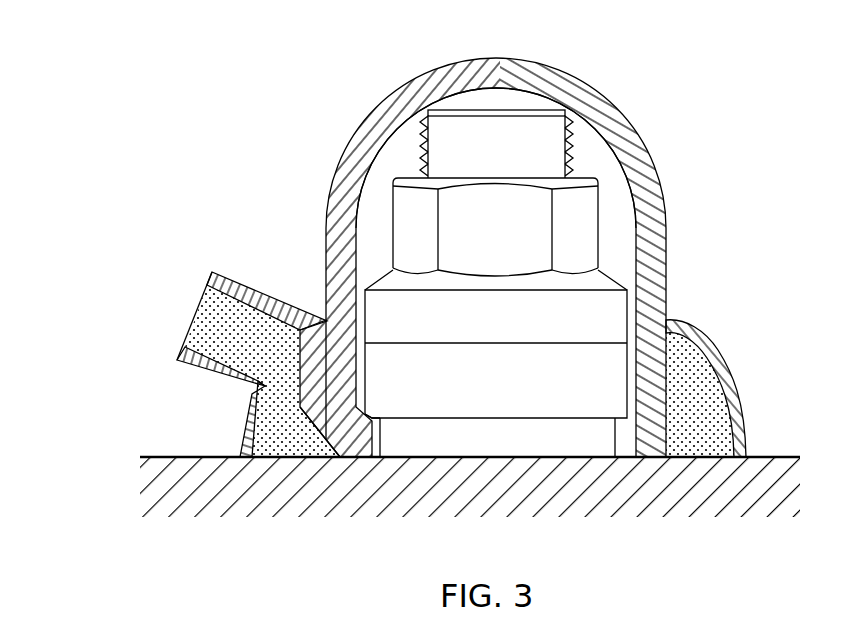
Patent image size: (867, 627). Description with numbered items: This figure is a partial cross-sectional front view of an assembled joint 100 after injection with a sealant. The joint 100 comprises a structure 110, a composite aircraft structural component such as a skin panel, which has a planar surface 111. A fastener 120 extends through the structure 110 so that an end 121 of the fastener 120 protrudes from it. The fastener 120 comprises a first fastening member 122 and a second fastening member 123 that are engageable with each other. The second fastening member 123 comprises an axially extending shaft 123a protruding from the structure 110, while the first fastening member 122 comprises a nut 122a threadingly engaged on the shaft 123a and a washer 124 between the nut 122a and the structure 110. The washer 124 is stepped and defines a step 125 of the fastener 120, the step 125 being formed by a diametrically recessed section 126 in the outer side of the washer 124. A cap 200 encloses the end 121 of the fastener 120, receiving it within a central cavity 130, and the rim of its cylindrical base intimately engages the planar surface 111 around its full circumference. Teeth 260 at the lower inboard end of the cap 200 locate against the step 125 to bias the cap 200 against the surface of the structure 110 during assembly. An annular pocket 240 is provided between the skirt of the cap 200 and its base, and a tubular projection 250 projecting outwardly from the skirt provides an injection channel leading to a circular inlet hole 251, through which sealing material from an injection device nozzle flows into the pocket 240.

The joint 100 is at (676, 83).
The structure 110 is at (733, 483).
The planar surface 111 is at (202, 455).
The fastener 120 is at (405, 213).
The end 121 is at (578, 230).
The first fastening member 122 is at (600, 283).
The nut 122a is at (413, 231).
The second fastening member 123 is at (548, 130).
The shaft 123a is at (443, 147).
The washer 124 is at (593, 367).
The step 125 is at (372, 416).
The diametrically recessed section 126 is at (465, 448).
The central cavity 130 is at (605, 172).
The cap 200 is at (398, 99).
The annular pocket 240 is at (687, 372).
The tubular projection 250 is at (238, 278).
The inlet hole 251 is at (293, 350).
The teeth 260 is at (357, 460).